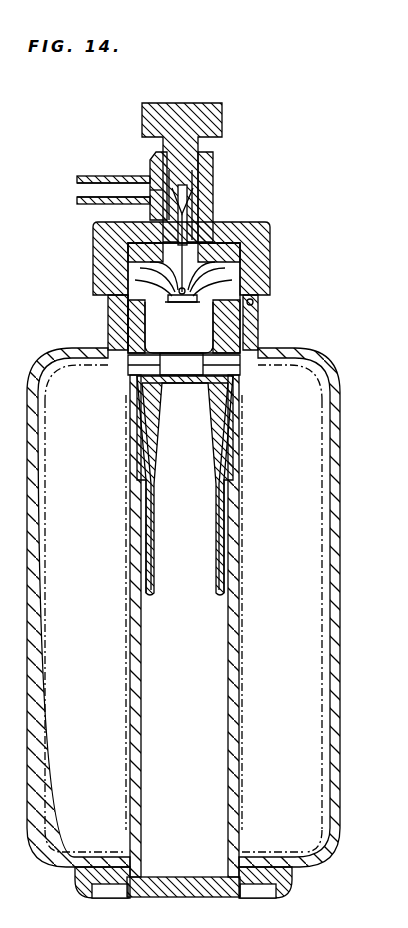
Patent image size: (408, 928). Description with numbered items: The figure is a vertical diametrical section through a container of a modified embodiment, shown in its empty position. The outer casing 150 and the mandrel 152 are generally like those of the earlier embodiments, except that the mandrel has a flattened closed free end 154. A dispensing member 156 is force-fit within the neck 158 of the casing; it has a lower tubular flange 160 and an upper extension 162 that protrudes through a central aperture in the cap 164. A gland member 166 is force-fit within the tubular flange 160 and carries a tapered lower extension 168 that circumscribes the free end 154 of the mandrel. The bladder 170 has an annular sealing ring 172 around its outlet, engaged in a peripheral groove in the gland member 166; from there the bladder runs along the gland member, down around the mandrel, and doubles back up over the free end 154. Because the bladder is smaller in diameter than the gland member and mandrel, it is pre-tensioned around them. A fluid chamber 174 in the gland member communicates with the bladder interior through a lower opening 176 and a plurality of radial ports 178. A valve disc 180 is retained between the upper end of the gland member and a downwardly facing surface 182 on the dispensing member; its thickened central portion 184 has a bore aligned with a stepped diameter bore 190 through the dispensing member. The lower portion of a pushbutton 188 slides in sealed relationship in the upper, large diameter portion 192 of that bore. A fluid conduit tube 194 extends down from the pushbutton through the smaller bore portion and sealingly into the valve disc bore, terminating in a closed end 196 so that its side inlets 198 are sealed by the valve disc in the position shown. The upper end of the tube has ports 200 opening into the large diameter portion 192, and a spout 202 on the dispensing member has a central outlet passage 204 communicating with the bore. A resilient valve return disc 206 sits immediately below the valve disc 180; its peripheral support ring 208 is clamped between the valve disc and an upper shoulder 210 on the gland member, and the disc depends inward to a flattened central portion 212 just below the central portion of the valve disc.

The outer casing 150 is at (300, 352).
The mandrel 152 is at (232, 692).
The free end 154 is at (200, 385).
The dispensing member 156 is at (227, 180).
The neck 158 is at (252, 325).
The lower tubular flange 160 is at (124, 333).
The upper extension 162 is at (212, 160).
The cap 164 is at (236, 228).
The gland member 166 is at (128, 312).
The tapered lower extension 168 is at (240, 408).
The bladder 170 is at (243, 427).
The annular sealing ring 172 is at (258, 305).
The fluid chamber 174 is at (200, 348).
The lower opening 176 is at (176, 383).
The radial ports 178 is at (118, 372).
The valve disc 180 is at (240, 292).
The downwardly facing surface 182 is at (236, 255).
The thickened central portion 184 is at (179, 327).
The pushbutton 188 is at (186, 110).
The stepped diameter bore 190 is at (212, 213).
The large diameter portion 192 is at (196, 201).
The fluid conduit tube 194 is at (165, 219).
The closed end 196 is at (190, 300).
The side inlets 198 is at (150, 256).
The ports 200 is at (187, 192).
The spout 202 is at (108, 177).
The central outlet passage 204 is at (78, 192).
The resilient valve return disc 206 is at (132, 284).
The peripheral support ring 208 is at (150, 272).
The upper shoulder 210 is at (225, 280).
The flattened central portion 212 is at (176, 302).